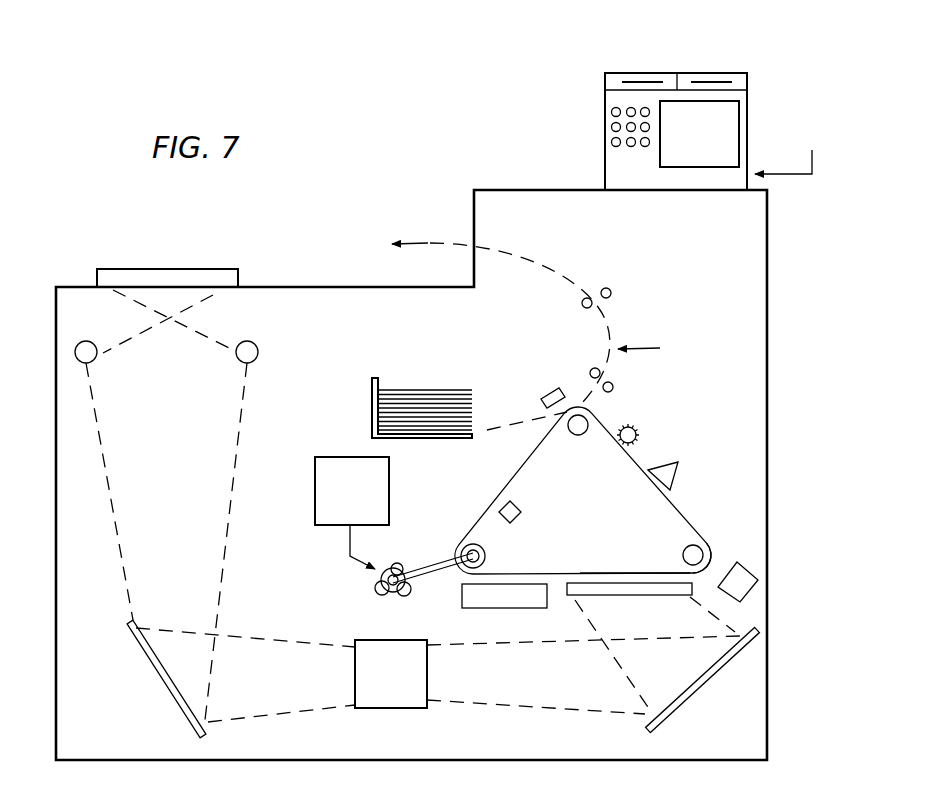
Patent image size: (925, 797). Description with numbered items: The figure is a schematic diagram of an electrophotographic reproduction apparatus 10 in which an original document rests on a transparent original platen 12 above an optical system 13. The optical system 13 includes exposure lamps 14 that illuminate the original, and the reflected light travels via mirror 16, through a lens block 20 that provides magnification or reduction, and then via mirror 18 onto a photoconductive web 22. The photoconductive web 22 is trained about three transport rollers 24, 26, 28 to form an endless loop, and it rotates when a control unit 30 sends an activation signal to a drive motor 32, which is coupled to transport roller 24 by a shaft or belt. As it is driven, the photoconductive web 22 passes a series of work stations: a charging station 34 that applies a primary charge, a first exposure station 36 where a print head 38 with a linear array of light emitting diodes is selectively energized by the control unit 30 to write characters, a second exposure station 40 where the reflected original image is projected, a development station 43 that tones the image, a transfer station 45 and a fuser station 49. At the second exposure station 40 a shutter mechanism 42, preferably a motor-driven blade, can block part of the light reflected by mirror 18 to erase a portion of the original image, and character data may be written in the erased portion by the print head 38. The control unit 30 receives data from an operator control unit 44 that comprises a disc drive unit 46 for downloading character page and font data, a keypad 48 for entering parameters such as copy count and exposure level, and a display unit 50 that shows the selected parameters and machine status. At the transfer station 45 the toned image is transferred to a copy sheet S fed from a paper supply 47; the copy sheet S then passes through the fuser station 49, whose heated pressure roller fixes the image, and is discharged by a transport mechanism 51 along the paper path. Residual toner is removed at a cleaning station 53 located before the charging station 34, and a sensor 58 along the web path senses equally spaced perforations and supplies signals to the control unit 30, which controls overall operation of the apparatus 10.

The electrophotographic reproduction apparatus 10 is at (777, 254).
The original platen 12 is at (88, 264).
The optical system 13 is at (255, 480).
The exposure lamps 14 is at (70, 352).
The mirror 16 is at (153, 688).
The mirror 18 is at (708, 697).
The lens block 20 is at (391, 674).
The photoconductive web 22 is at (500, 480).
The transport roller 24 is at (493, 554).
The transport roller 26 is at (580, 441).
The transport roller 28 is at (679, 549).
The control unit 30 is at (352, 513).
The drive motor 32 is at (368, 586).
The charging station 34 is at (678, 457).
The first exposure station 36 is at (714, 544).
The print head 38 is at (757, 571).
The second exposure station 40 is at (585, 570).
The shutter mechanism 42 is at (620, 601).
The development station 43 is at (481, 612).
The operator control unit 44 is at (760, 98).
The transfer station 45 is at (541, 394).
The disc drive unit 46 is at (682, 69).
The paper supply 47 is at (366, 410).
The keypad 48 is at (597, 140).
The fuser station 49 is at (581, 362).
The display unit 50 is at (699, 134).
The transport mechanism 51 is at (622, 290).
The cleaning station 53 is at (643, 428).
The sensor 58 is at (524, 504).
The copy sheet S is at (433, 388).